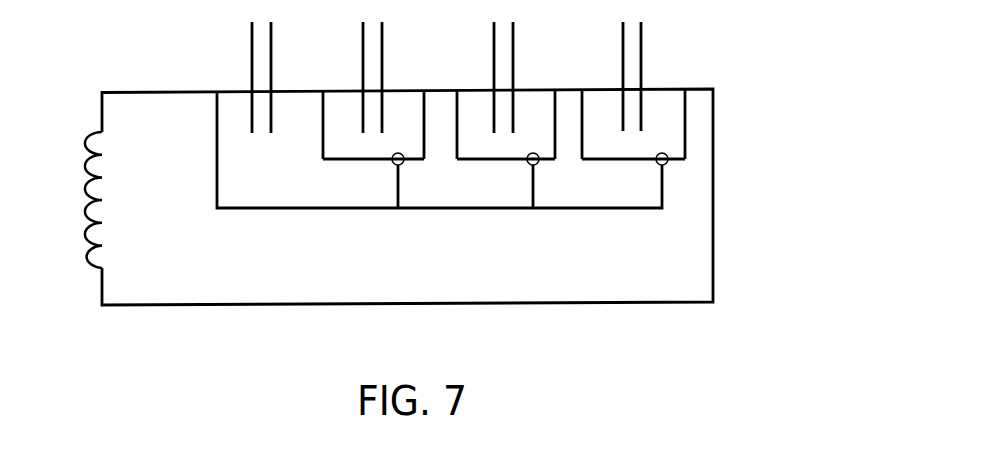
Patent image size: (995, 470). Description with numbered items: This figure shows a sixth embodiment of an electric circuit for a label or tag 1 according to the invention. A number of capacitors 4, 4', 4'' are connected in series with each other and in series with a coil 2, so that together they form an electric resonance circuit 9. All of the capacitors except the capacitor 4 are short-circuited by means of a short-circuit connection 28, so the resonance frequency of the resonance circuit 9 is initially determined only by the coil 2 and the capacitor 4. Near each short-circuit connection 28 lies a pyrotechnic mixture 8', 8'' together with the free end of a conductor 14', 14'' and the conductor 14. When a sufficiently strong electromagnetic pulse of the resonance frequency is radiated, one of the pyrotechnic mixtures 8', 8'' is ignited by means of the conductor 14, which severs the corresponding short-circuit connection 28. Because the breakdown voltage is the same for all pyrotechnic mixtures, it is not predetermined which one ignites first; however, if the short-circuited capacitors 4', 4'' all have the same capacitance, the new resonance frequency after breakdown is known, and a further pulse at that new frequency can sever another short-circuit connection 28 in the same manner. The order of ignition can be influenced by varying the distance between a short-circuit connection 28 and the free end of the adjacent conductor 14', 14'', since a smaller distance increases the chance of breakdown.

The measuring apparatus housing 1 is at (778, 333).
The coil 2 is at (83, 200).
The capacitor 4 is at (234, 77).
The capacitor 4' is at (342, 77).
The capacitor 4'' is at (474, 77).
The pyrotechnic mixture 8' is at (405, 102).
The pyrotechnic mixture 8'' is at (529, 102).
The electric resonance circuit 9 is at (154, 141).
The conductor 14 is at (431, 194).
The conductor 14' is at (373, 194).
The conductor 14'' is at (506, 193).
The short-circuit connection 28 is at (328, 162).